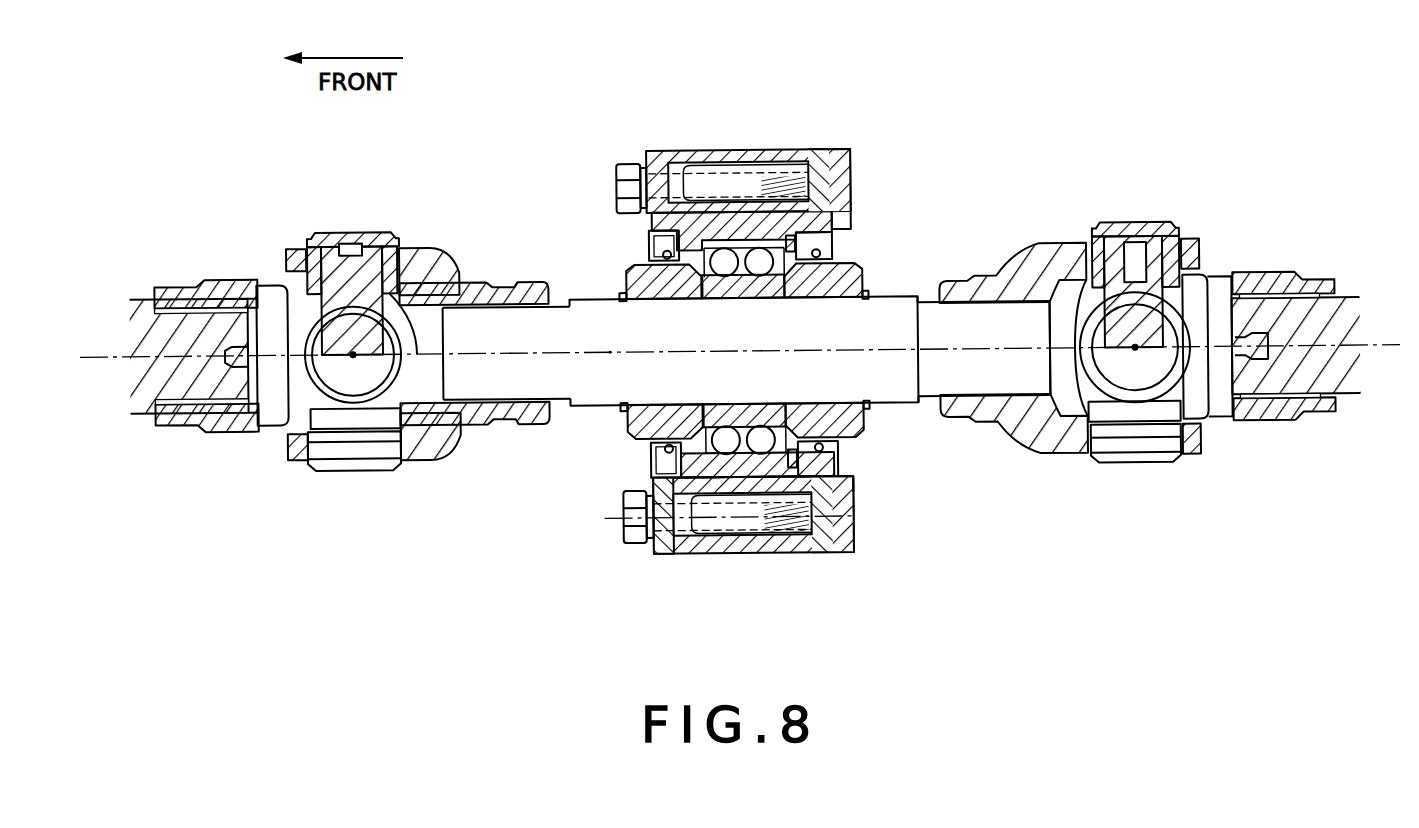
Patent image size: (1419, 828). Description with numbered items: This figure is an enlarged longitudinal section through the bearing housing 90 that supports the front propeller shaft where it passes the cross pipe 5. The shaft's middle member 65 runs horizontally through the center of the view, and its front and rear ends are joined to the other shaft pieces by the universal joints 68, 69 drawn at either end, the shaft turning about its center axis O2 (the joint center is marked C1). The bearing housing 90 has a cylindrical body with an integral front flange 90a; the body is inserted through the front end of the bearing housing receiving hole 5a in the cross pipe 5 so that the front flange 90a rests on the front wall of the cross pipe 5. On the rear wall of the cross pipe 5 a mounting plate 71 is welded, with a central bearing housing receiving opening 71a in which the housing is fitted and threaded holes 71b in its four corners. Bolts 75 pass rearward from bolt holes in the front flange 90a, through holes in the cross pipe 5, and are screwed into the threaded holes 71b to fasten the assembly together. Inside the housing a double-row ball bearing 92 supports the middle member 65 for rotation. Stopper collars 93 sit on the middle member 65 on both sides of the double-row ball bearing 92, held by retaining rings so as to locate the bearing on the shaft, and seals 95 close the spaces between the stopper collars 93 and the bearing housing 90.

The cross pipe 5 is at (778, 395).
The bearing housing receiving hole 5a is at (827, 221).
The middle member 65 is at (585, 313).
The universal joint 68 is at (353, 455).
The universal joint 69 is at (1143, 462).
The mounting plate 71 is at (779, 557).
The bearing housing receiving opening 71a is at (857, 480).
The threaded holes 71b is at (853, 525).
The bolts 75 is at (630, 160).
The bearing housing 90 is at (718, 217).
The front flange 90a is at (665, 556).
The double-row ball bearing 92 is at (757, 455).
The stopper collars 93 is at (637, 435).
The seals 95 is at (650, 245).
The center axis of the middle member O2 is at (609, 353).
The center of rear universal joint C1 is at (1197, 417).